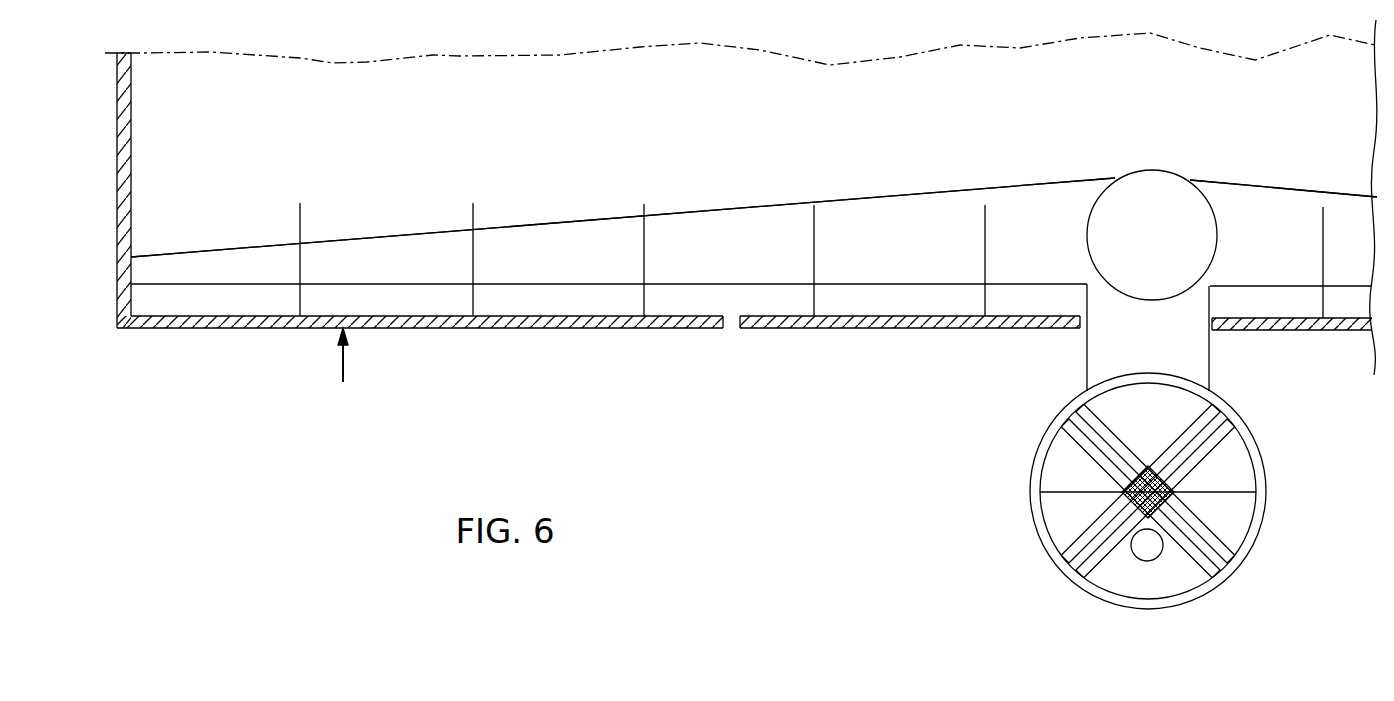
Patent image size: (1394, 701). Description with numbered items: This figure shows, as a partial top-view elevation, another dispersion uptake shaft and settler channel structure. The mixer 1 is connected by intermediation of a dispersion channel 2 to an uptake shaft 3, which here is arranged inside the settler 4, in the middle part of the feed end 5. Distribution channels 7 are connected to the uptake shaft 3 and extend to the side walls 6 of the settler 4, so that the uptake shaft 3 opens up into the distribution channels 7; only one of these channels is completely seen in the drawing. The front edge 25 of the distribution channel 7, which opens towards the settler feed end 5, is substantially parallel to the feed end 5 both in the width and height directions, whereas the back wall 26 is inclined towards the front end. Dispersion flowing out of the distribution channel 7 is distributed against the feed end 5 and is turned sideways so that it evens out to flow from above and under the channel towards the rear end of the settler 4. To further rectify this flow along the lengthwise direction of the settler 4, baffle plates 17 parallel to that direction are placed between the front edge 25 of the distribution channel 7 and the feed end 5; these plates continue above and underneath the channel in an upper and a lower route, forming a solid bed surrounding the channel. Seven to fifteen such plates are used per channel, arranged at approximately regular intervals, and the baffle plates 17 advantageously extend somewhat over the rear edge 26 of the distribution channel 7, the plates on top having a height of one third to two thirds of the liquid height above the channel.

The mixer 1 is at (1040, 549).
The dispersion channel 2 is at (1100, 362).
The uptake shaft 3 is at (1177, 182).
The settler 4 is at (343, 372).
The feed end 5 is at (570, 330).
The side walls 6 is at (118, 163).
The distribution channels 7 is at (390, 242).
The baffle plates 17 is at (473, 272).
The front edge 25 is at (730, 286).
The back wall 26 is at (740, 207).